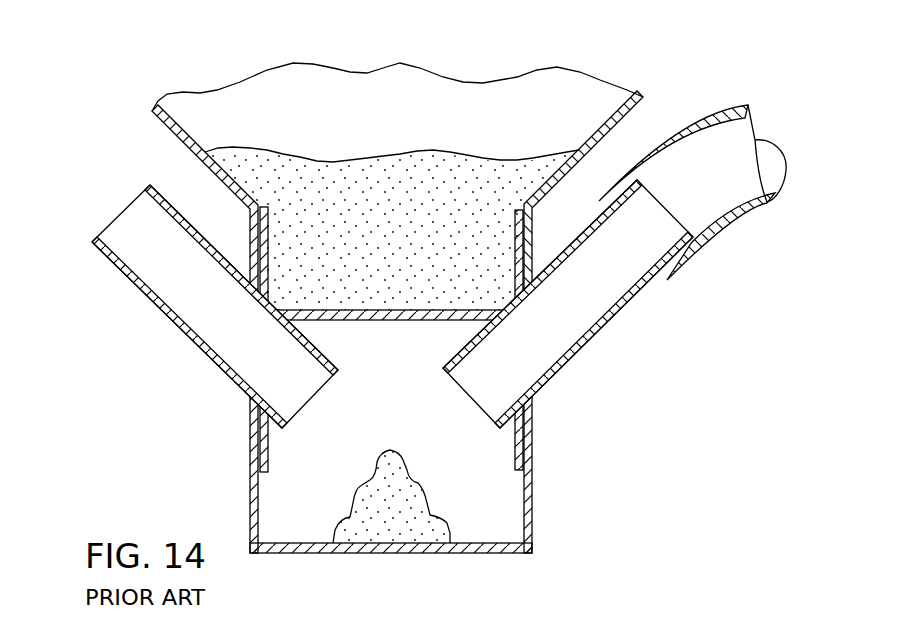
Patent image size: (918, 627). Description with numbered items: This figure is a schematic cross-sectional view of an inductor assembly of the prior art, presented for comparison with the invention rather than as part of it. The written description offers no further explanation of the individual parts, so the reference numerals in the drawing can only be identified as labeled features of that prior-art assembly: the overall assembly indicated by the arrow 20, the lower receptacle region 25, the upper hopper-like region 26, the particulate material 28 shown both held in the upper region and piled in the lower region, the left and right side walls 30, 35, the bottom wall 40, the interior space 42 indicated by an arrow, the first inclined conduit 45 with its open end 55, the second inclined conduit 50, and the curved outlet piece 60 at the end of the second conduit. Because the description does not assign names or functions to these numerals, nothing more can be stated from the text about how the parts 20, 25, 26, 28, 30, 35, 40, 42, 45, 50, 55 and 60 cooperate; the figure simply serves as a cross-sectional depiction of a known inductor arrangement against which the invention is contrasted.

The material transfer conduit assembly 20 is at (423, 242).
The receiving container 25 is at (403, 491).
The hopper 26 is at (176, 133).
The particulate material 28 is at (407, 232).
The container left side wall 30 is at (248, 472).
The container right side wall 35 is at (533, 521).
The container bottom wall 40 is at (392, 556).
The container interior 42 is at (487, 462).
The first conduit 45 is at (187, 337).
The second conduit 50 is at (598, 340).
The conduit inlet end 55 is at (110, 221).
The outlet elbow 60 is at (757, 213).